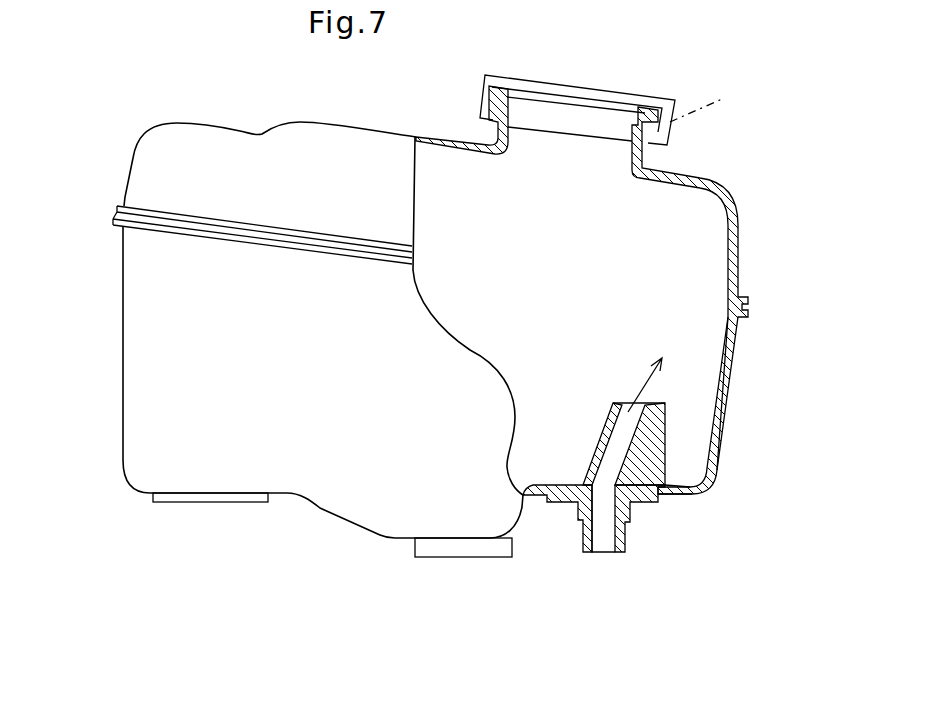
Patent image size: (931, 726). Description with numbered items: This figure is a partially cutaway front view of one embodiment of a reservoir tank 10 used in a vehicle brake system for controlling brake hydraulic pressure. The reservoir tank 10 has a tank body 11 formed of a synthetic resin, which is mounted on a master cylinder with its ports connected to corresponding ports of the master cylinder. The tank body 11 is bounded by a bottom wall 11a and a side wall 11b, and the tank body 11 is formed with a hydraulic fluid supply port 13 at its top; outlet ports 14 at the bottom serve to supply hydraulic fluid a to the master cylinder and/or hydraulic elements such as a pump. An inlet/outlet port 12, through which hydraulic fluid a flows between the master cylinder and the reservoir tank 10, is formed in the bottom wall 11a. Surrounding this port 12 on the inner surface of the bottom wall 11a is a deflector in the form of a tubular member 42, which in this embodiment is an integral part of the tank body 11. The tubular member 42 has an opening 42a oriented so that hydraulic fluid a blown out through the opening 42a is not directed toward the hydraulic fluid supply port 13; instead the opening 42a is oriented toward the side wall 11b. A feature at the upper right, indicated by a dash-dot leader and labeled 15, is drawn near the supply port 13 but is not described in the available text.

The reservoir tank 10 is at (114, 352).
The tank body 11 is at (738, 218).
The bottom wall 11a is at (660, 503).
The side wall 11b is at (728, 353).
The inlet/outlet port 12 is at (612, 543).
The hydraulic fluid supply port 13 is at (578, 113).
The outlet ports 14 is at (197, 502).
The filler opening 15 is at (713, 103).
The tubular member 42 is at (602, 428).
The opening 42a is at (647, 402).
The hydraulic fluid a is at (640, 447).